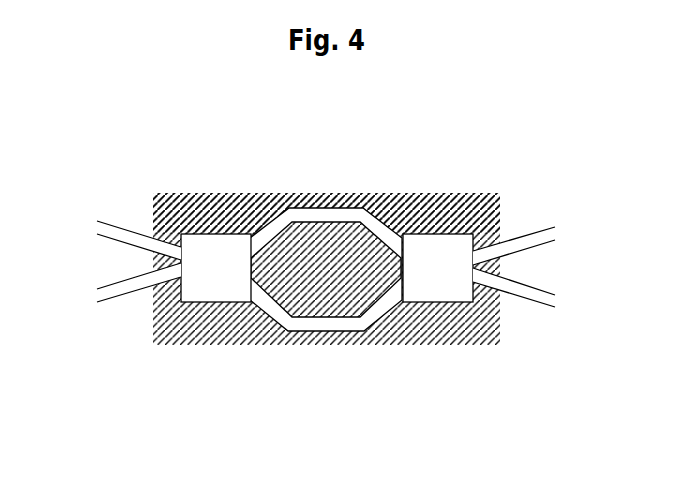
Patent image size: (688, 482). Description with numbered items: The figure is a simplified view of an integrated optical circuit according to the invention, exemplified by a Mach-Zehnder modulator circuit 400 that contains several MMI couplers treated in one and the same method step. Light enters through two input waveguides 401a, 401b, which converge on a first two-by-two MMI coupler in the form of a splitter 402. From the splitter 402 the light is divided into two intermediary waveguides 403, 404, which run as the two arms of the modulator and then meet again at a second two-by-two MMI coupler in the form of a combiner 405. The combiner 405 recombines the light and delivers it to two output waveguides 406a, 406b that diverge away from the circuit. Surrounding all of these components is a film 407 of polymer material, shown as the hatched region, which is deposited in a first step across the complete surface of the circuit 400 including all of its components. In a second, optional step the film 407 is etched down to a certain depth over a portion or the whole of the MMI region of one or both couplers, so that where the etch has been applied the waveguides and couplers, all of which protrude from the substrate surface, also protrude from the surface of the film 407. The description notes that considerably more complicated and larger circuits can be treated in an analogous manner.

The Mach-Zehnder modulator circuit 400 is at (229, 192).
The input waveguide 401a is at (127, 296).
The input waveguide 401b is at (115, 242).
The splitter 402 is at (223, 303).
The intermediary waveguide 403 is at (317, 333).
The intermediary waveguide 404 is at (350, 223).
The combiner 405 is at (447, 303).
The output waveguide 406a is at (530, 302).
The output waveguide 406b is at (538, 247).
The film 407 is at (424, 212).